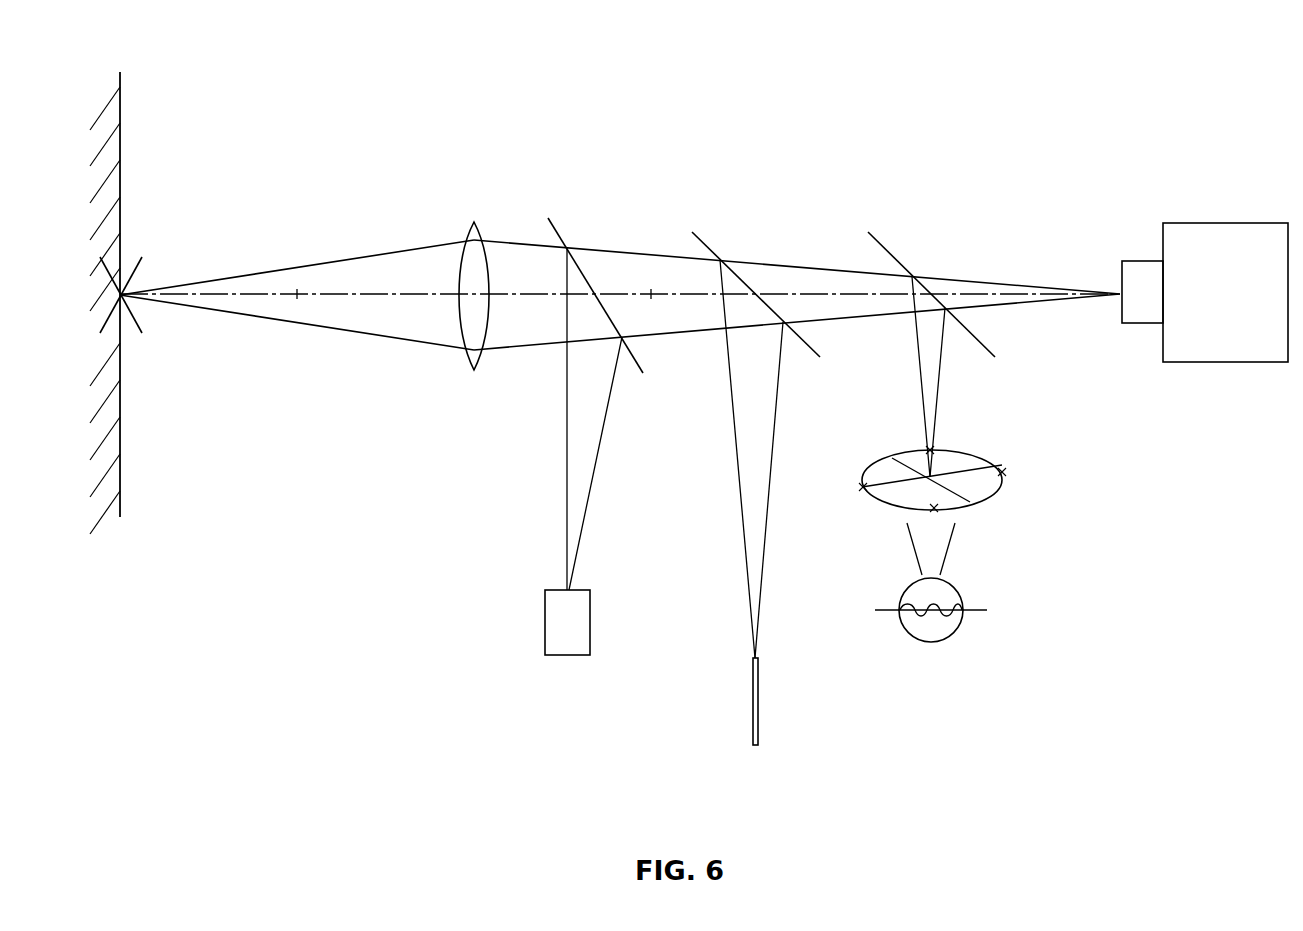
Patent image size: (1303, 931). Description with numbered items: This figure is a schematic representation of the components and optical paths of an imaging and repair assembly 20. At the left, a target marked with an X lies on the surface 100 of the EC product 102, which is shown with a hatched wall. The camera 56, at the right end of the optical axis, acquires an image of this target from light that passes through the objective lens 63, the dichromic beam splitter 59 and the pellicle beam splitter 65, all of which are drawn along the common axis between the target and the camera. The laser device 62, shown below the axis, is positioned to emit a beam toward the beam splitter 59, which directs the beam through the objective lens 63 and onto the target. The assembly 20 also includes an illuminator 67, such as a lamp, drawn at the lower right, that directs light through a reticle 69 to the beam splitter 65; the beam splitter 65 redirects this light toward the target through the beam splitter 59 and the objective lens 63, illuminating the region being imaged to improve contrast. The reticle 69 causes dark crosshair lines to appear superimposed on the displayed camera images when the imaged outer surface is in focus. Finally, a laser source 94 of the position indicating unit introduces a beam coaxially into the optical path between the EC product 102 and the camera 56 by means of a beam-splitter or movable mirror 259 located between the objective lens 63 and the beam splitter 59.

The assembly 20 is at (811, 163).
The surface 100 is at (122, 142).
The EC product 102 is at (106, 110).
The objective lens 63 is at (478, 234).
The beam-splitter or movable mirror 259 is at (557, 228).
The dichromic beam splitter 59 is at (707, 252).
The pellicle beam splitter 65 is at (898, 261).
The camera 56 is at (1225, 222).
The laser source 94 is at (545, 620).
The laser device 62 is at (753, 734).
The reticle 69 is at (985, 452).
The illuminator 67 is at (957, 630).